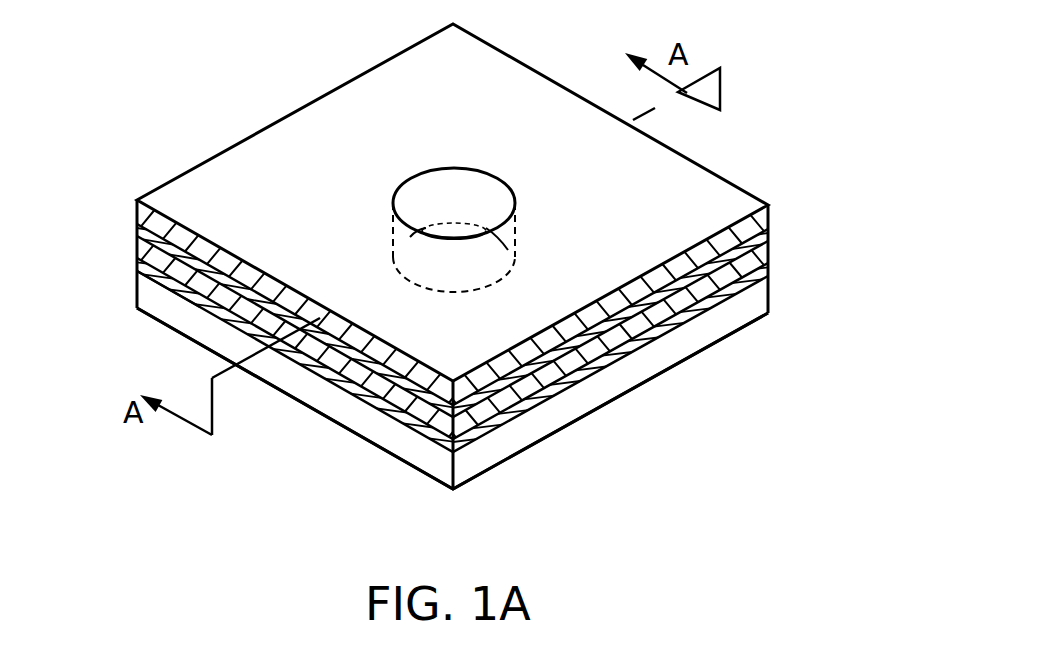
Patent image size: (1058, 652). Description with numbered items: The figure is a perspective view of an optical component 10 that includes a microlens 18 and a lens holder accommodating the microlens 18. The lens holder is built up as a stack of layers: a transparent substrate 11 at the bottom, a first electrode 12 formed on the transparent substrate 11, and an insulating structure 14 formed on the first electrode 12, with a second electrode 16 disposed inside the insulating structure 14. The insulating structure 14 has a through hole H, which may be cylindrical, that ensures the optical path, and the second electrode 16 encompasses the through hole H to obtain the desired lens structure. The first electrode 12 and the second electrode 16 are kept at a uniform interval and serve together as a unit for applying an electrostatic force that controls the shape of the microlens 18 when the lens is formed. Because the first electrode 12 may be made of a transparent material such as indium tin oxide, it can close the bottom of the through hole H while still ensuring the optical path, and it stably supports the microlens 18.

The optical component 10 is at (475, 246).
The transparent substrate 11 is at (172, 316).
The first electrode 12 is at (158, 288).
The insulating structure 14 is at (147, 220).
The second electrode 16 is at (577, 373).
The microlens 18 is at (455, 232).
The through hole H is at (472, 185).